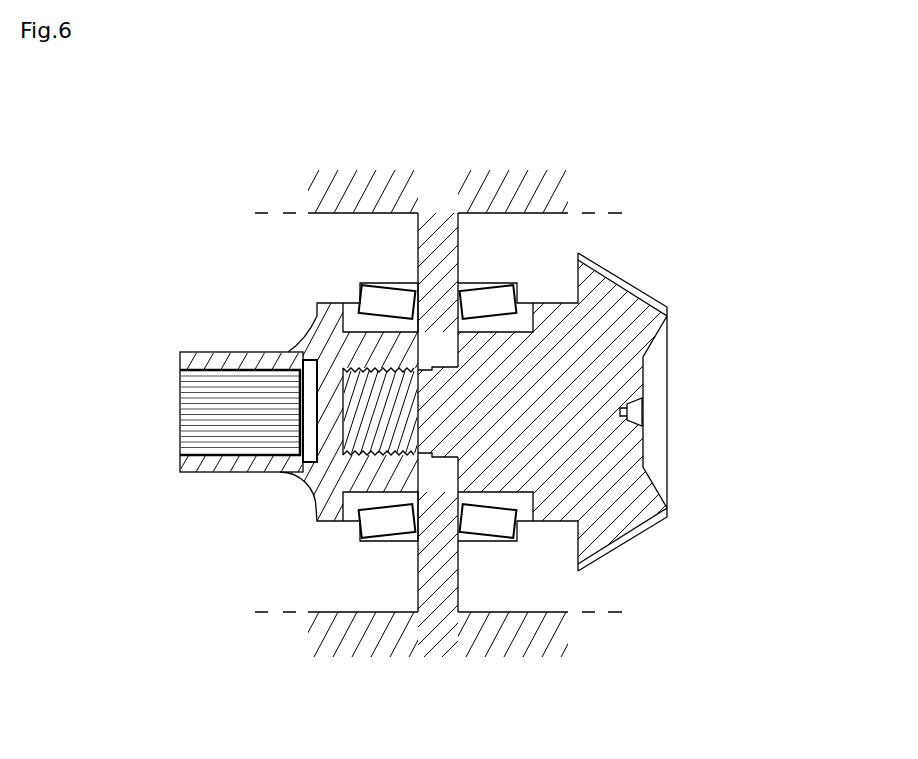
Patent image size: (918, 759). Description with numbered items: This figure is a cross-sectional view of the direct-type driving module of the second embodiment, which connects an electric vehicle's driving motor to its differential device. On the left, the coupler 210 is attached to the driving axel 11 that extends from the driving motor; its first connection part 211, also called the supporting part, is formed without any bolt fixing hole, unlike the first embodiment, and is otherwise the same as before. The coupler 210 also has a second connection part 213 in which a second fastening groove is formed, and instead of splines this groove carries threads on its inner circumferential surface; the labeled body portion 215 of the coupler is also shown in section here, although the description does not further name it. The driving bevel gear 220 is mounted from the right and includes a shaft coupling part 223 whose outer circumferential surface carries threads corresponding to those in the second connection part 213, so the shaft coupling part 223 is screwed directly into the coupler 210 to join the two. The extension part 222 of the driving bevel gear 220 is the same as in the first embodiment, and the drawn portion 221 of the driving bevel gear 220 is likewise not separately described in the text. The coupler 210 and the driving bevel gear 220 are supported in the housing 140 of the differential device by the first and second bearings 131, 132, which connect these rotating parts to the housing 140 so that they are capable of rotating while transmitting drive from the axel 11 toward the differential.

The driving axel 11 is at (213, 428).
The housing 140 is at (470, 188).
The coupler 210 is at (271, 399).
The first connection part 211 is at (220, 352).
The second connection part 213 is at (352, 327).
The hub 215 is at (320, 323).
The driving bevel gear 220 is at (459, 465).
The flange 221 is at (615, 298).
The extension part 222 is at (487, 340).
The shaft coupling part 223 is at (377, 407).
The first bearing 131 is at (407, 537).
The second bearing 132 is at (472, 537).